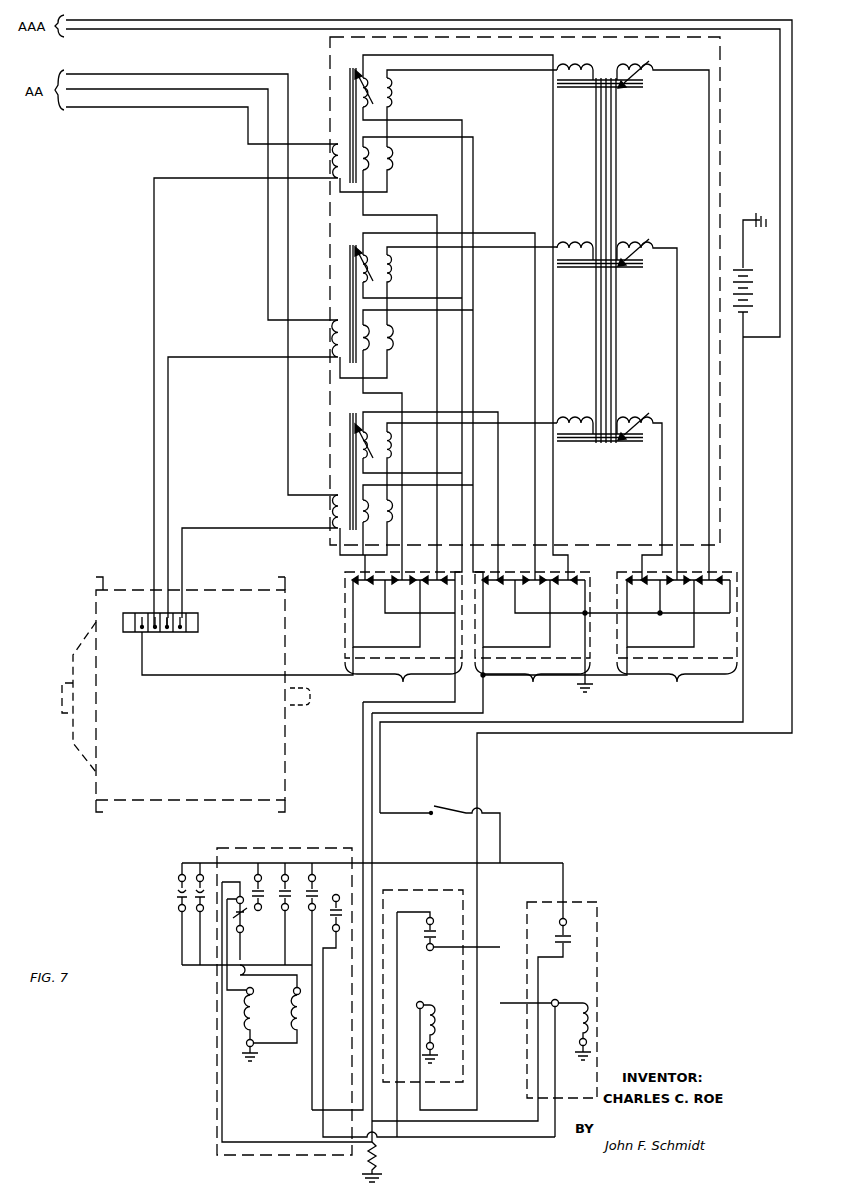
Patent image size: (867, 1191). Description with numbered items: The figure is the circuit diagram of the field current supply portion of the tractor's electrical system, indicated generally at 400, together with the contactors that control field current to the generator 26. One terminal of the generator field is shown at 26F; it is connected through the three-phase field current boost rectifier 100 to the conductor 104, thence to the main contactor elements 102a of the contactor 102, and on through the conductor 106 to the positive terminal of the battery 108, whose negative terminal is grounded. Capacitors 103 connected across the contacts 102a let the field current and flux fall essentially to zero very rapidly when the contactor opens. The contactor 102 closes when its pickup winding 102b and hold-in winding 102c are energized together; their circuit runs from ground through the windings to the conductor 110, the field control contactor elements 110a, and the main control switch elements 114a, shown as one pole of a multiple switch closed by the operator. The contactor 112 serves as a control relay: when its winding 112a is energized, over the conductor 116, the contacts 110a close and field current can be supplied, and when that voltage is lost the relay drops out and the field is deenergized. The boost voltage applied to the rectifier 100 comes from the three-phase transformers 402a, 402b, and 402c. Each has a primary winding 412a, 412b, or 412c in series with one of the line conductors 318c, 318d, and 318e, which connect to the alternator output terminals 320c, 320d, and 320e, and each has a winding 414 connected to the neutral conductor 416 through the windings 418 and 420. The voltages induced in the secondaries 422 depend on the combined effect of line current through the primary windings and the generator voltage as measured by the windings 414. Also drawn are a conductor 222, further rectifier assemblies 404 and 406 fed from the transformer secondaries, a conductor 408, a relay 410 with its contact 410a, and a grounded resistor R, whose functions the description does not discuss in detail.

The conductor 116 is at (177, 25).
The conductor line 222 is at (276, 30).
The line conductor 318c is at (152, 75).
The line conductor 318d is at (157, 91).
The line conductor 318e is at (198, 108).
The field current supply mechanism 400 is at (330, 380).
The three-phase transformer 402c is at (335, 105).
The three-phase transformer 402b is at (335, 289).
The three-phase transformer 402a is at (335, 452).
The primary winding 412c is at (337, 157).
The primary winding 412b is at (337, 338).
The primary winding 412a is at (337, 508).
The secondary winding 422 is at (360, 148).
The winding 418 is at (392, 93).
The winding 414 is at (391, 167).
The winding 420 is at (563, 68).
The neutral conductor 416 is at (596, 152).
The battery 108 is at (753, 288).
The field current boost rectifier 100 is at (403, 637).
The rectifier 404 is at (551, 642).
The rectifier 406 is at (610, 635).
The conductor 106 is at (649, 722).
The conductor 408 is at (374, 771).
The conductor 104 is at (362, 796).
The main control switch elements 114a is at (440, 834).
The generator 26 is at (182, 736).
The alternator three-phase output terminal 320c is at (198, 621).
The alternator three-phase output terminal 320d is at (181, 618).
The alternator three-phase output terminal 320e is at (156, 622).
The generator field terminal 26F is at (142, 634).
The contactor 102 is at (217, 1117).
The capacitors 103 is at (173, 914).
The main contactor elements 102a is at (283, 888).
The conductor 110 is at (221, 1038).
The pickup winding 102b is at (274, 991).
The hold-in winding 102c is at (305, 1030).
The contactor 112 is at (423, 891).
The field control contactor elements 110a is at (436, 931).
The winding 112a is at (458, 1032).
The relay 410 is at (600, 912).
The relay contact 410a is at (471, 992).
The resistor R is at (379, 1160).